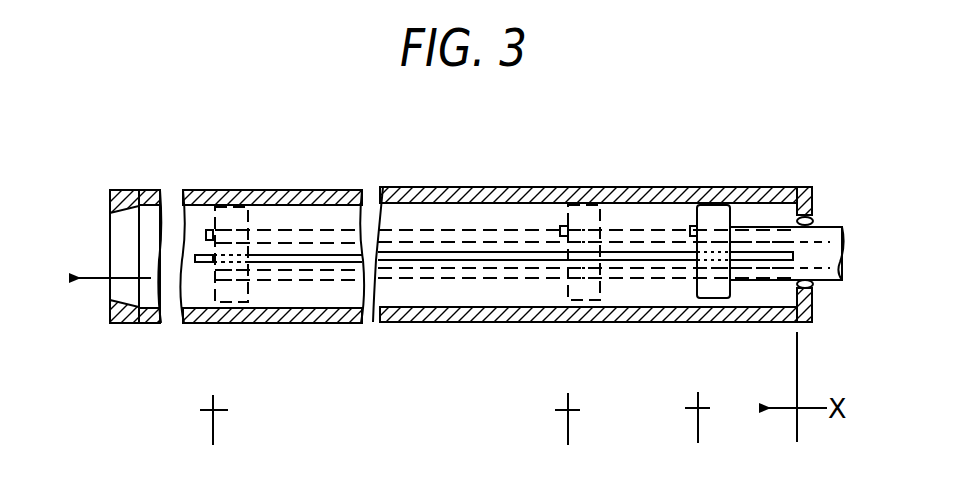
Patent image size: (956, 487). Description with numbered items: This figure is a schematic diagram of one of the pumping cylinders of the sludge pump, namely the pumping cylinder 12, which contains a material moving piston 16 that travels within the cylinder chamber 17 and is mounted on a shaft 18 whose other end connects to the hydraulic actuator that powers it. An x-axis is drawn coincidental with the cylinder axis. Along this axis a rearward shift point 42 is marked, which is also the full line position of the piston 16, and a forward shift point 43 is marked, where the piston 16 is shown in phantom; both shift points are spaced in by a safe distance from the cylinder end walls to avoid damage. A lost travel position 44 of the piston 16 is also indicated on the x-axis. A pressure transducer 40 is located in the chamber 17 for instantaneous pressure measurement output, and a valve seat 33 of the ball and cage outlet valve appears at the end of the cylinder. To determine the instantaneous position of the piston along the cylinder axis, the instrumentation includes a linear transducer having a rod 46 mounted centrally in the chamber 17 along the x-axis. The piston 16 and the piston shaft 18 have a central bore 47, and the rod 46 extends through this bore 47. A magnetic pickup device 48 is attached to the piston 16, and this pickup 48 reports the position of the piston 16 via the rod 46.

The upper pumping cylinder 12 is at (440, 183).
The material moving piston 16 is at (232, 212).
The cylinder chamber 17 is at (198, 293).
The shaft 18 is at (318, 228).
The valve seat 33 is at (120, 322).
The pressure transducer 40 is at (152, 187).
The rearward shift point 42 is at (696, 418).
The forward shift point 43 is at (215, 425).
The lost travel position 44 is at (566, 418).
The rod 46 is at (765, 250).
The central bore 47 is at (811, 258).
The magnetic pickup device 48 is at (206, 233).